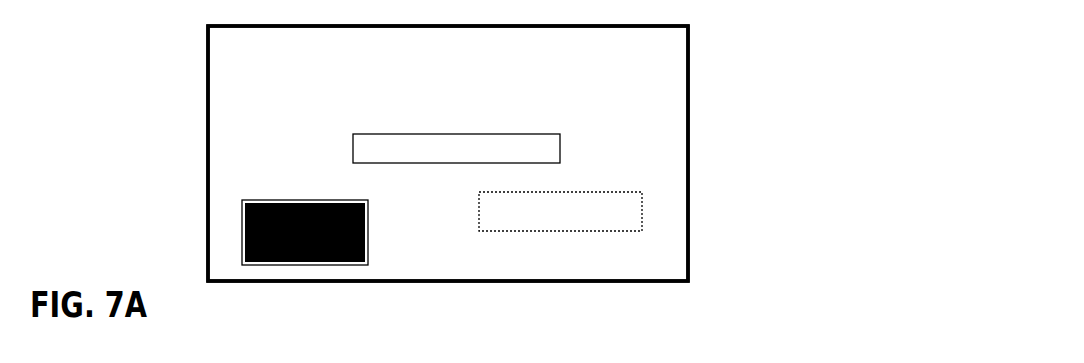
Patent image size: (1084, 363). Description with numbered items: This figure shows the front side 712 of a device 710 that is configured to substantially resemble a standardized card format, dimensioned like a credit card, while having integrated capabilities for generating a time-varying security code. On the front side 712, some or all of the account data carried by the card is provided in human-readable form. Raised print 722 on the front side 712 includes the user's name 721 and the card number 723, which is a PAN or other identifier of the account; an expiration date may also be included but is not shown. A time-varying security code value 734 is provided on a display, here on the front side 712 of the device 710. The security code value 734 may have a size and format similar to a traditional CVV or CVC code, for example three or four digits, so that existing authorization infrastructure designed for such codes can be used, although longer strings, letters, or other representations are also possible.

The device 710 is at (168, 152).
The front side 712 is at (657, 255).
The user's name 721 is at (592, 192).
The raised print 722 is at (412, 163).
The card number 723 is at (560, 135).
The time-varying security code value 734 is at (305, 265).